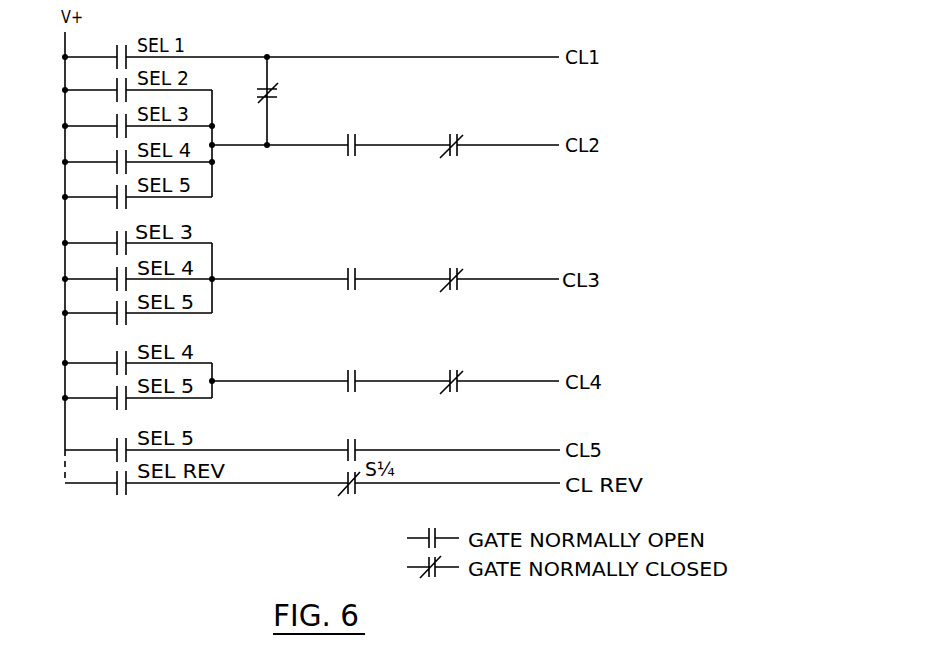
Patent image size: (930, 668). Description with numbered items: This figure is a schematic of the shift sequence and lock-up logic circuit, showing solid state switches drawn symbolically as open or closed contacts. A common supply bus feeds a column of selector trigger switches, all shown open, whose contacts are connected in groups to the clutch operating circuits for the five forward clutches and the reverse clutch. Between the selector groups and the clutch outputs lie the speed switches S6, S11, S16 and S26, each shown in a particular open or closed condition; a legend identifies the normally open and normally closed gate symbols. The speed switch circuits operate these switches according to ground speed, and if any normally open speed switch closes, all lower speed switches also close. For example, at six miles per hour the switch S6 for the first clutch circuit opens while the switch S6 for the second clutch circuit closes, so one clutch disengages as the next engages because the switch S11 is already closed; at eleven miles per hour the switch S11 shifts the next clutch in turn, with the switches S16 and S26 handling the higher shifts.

The speed switch S6 is at (322, 106).
The speed switch S11 is at (421, 206).
The speed switch S16 is at (425, 324).
The speed switch S26 is at (426, 409).